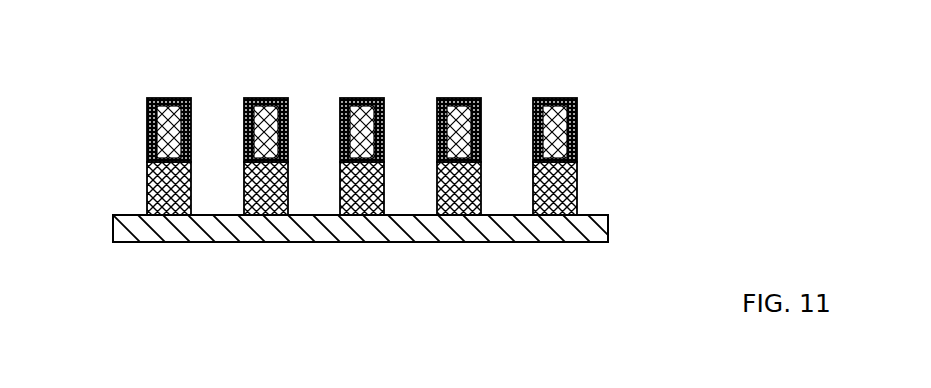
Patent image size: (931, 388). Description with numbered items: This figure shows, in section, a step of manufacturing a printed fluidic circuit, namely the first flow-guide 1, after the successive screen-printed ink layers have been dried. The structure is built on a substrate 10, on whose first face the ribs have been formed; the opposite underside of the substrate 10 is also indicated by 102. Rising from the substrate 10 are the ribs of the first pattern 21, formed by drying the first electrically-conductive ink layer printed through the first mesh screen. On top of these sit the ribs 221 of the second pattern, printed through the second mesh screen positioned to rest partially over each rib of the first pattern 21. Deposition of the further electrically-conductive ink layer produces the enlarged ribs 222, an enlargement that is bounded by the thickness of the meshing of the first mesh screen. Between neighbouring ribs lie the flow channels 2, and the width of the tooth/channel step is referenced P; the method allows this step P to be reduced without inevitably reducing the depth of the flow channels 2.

The first flow-guide 1 is at (103, 51).
The substrate 10 is at (597, 228).
The bottom surface of substrate 102 is at (541, 243).
The flow channels 2 is at (309, 174).
The first pattern of ribs 21 is at (596, 190).
The ribs of the second pattern 221 is at (577, 128).
The enlarged ribs 222 is at (457, 97).
The tooth/channel step P is at (243, 98).